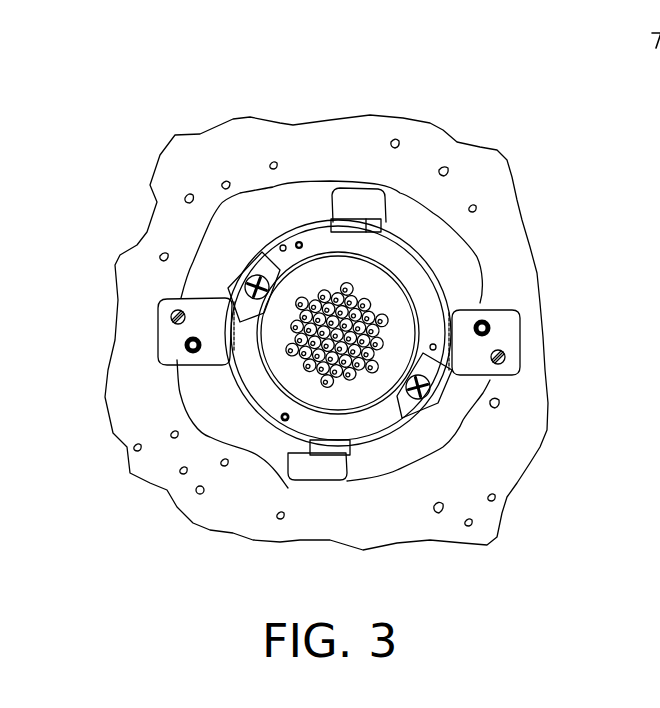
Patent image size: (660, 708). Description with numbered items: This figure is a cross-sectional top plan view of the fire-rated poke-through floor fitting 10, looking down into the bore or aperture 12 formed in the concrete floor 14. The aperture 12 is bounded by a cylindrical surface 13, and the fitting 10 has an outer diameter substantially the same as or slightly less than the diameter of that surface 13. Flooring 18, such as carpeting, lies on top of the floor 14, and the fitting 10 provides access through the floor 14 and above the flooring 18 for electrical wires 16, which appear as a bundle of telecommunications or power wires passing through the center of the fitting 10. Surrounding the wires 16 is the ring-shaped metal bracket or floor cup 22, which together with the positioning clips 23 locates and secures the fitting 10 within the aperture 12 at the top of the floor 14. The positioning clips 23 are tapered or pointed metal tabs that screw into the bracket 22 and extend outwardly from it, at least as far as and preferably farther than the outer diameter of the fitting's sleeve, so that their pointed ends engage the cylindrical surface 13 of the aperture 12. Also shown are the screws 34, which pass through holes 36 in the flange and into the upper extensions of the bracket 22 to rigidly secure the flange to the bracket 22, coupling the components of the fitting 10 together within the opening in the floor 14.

The fitting 10 is at (297, 232).
The aperture 12 is at (440, 267).
The cylindrical surface 13 is at (478, 302).
The concrete floor 14 is at (482, 190).
The electrical wires 16 is at (362, 291).
The flooring 18 is at (412, 223).
The bracket 22 is at (473, 360).
The positioning clips 23 is at (243, 261).
The screws 34 is at (171, 319).
The holes 36 is at (170, 299).